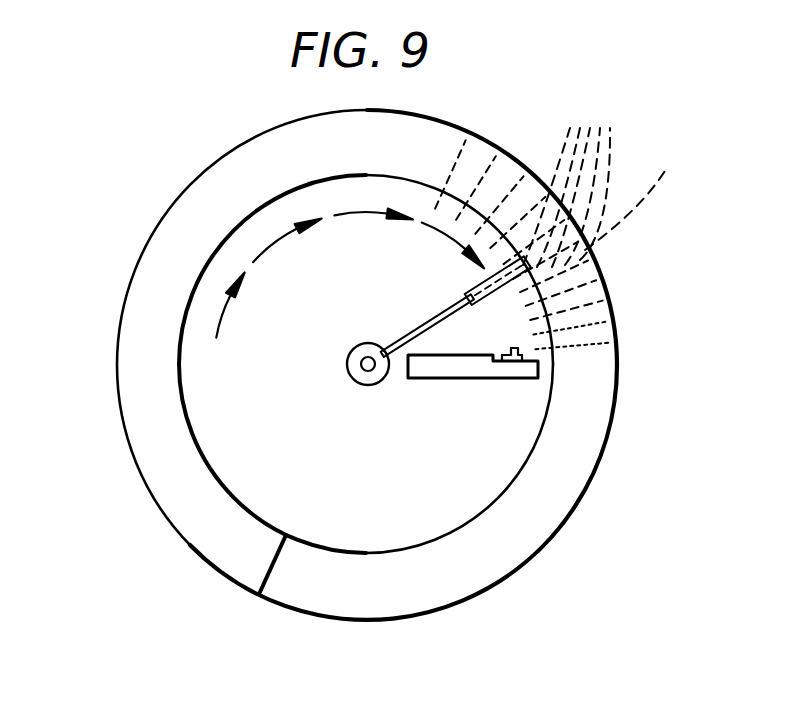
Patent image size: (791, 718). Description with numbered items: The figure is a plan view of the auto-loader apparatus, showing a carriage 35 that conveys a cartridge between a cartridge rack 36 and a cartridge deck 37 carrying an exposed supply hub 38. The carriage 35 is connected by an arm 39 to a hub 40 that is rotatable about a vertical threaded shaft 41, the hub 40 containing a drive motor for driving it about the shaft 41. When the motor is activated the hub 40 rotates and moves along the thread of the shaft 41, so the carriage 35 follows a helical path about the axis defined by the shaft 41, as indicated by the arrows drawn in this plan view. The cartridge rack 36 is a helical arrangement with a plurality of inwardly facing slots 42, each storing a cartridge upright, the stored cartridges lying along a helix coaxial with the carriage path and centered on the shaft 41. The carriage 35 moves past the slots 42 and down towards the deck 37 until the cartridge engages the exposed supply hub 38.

The carriage 35 is at (480, 288).
The cartridge rack 36 is at (160, 453).
The cartridge deck 37 is at (448, 379).
The exposed supply hub 38 is at (527, 356).
The arm 39 is at (409, 330).
The hub 40 is at (347, 363).
The threaded shaft 41 is at (363, 372).
The slots 42 is at (551, 216).